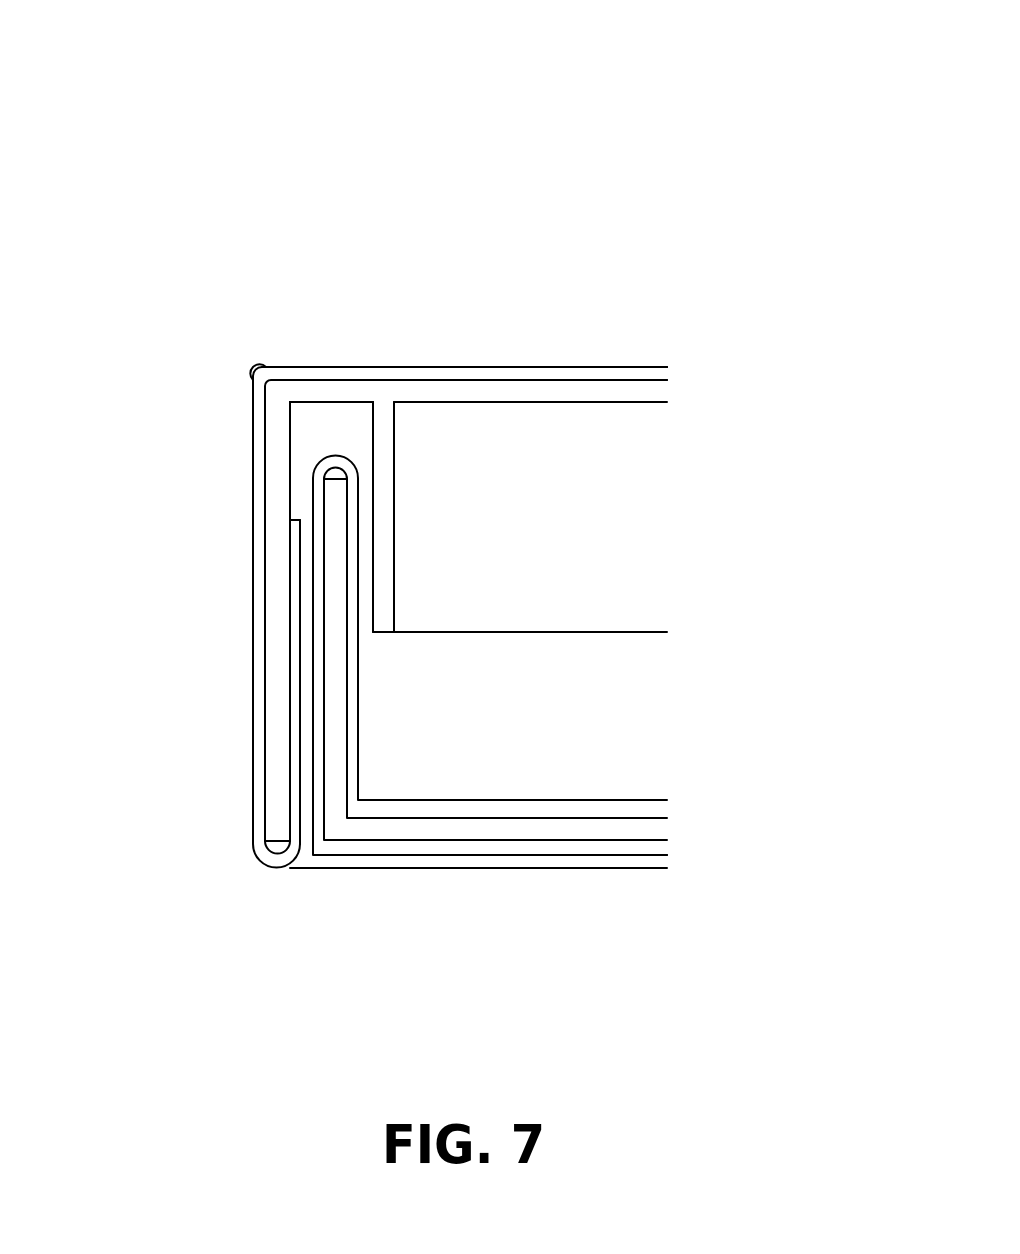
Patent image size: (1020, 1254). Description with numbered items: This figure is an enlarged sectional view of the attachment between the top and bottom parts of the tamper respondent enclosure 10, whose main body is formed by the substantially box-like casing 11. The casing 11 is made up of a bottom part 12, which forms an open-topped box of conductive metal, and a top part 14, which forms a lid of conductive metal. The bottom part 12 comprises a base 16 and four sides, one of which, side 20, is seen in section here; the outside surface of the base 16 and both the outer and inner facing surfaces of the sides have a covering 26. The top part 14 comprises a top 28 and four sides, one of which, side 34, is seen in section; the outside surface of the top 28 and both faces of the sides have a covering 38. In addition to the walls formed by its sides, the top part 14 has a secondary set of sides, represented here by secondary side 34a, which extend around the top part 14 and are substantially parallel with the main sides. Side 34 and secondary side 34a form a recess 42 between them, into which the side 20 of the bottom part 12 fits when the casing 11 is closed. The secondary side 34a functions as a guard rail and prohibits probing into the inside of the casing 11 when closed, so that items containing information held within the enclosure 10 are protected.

The tamper respondent enclosure 10 is at (338, 213).
The casing 11 is at (258, 364).
The bottom part 12 is at (626, 868).
The top part 14 is at (607, 364).
The base 16 is at (503, 836).
The side 20 is at (330, 508).
The covering 26 is at (325, 777).
The top 28 is at (487, 390).
The side 34 is at (272, 672).
The secondary side 34a is at (383, 578).
The covering 38 is at (262, 536).
The recess 42 is at (312, 428).